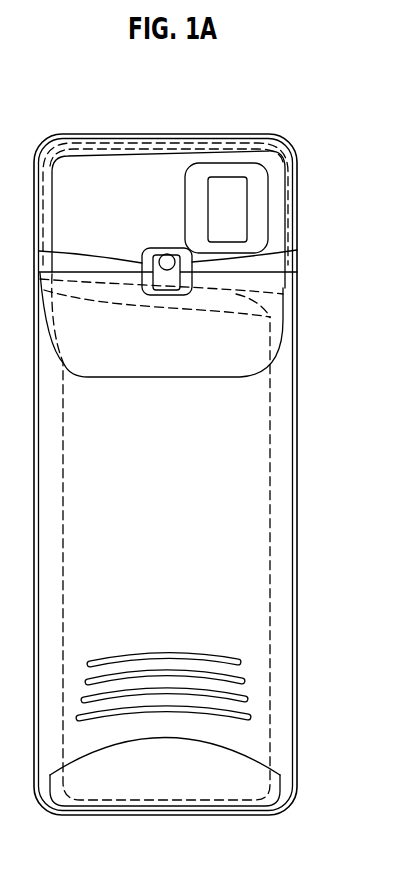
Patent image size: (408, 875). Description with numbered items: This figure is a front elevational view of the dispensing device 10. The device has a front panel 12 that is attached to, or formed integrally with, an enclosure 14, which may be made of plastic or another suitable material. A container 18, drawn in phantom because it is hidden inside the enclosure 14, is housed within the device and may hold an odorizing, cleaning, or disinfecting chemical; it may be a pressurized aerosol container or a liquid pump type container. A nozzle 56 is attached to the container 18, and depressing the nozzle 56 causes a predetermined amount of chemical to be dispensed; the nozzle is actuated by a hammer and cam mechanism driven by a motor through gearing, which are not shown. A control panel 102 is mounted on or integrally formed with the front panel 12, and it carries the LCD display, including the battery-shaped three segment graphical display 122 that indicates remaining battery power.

The dispensing device 10 is at (333, 620).
The front panel 12 is at (276, 217).
The enclosure 14 is at (298, 280).
The container 18 is at (255, 427).
The nozzle 56 is at (166, 255).
The control panel 102 is at (283, 290).
The three segment LCD graphical display 122 is at (239, 206).